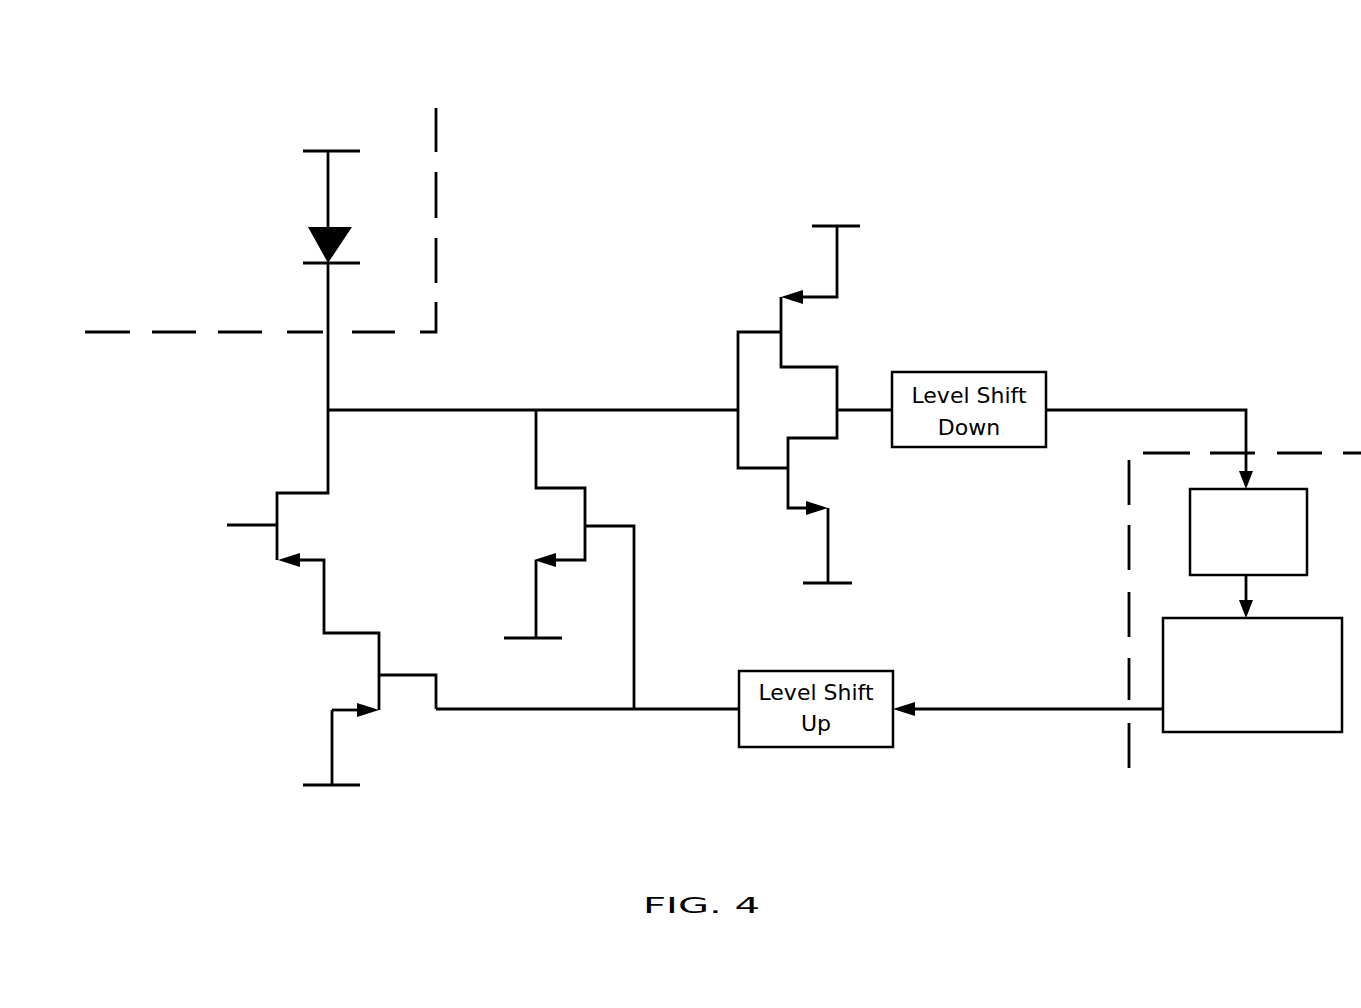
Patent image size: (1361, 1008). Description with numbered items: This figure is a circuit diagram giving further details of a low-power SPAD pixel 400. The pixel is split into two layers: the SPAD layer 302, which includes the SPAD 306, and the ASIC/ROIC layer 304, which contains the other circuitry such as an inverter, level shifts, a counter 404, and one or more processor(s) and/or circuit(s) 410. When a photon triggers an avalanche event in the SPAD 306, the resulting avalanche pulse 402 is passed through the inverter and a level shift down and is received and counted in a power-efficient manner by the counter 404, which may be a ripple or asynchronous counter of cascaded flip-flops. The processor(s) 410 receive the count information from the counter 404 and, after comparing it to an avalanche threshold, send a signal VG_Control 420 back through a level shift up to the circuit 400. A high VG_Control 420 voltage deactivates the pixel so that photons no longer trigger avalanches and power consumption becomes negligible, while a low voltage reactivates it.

The low-power SPAD pixel 400 is at (1225, 66).
The SPAD layer 302 is at (240, 220).
The ASIC/ROIC layer 304 is at (377, 582).
The SPAD 306 is at (292, 267).
The avalanche pulse 402 is at (1165, 412).
The counter 404 is at (1248, 532).
The processor(s) and/or circuit(s) 410 is at (1252, 653).
The VG_Control signal 420 is at (1028, 740).